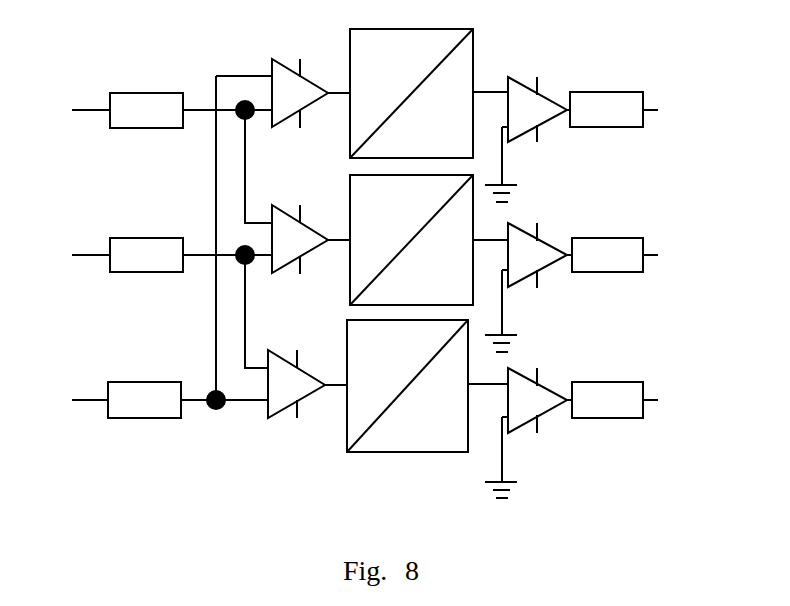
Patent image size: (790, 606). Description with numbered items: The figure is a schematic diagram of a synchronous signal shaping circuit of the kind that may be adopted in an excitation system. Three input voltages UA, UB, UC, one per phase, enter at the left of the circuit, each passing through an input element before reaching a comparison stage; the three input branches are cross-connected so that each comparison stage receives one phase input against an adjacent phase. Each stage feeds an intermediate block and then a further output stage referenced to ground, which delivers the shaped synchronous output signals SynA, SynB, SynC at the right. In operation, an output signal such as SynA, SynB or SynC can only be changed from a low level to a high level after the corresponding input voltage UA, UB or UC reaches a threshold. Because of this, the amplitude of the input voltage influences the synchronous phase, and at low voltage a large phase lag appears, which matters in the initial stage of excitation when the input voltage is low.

The phase A input voltage UA is at (103, 112).
The phase B input voltage UB is at (104, 256).
The phase C input voltage UC is at (103, 402).
The synchronous output signal A SynA is at (649, 108).
The synchronous output signal B SynB is at (648, 254).
The synchronous output signal C SynC is at (648, 400).